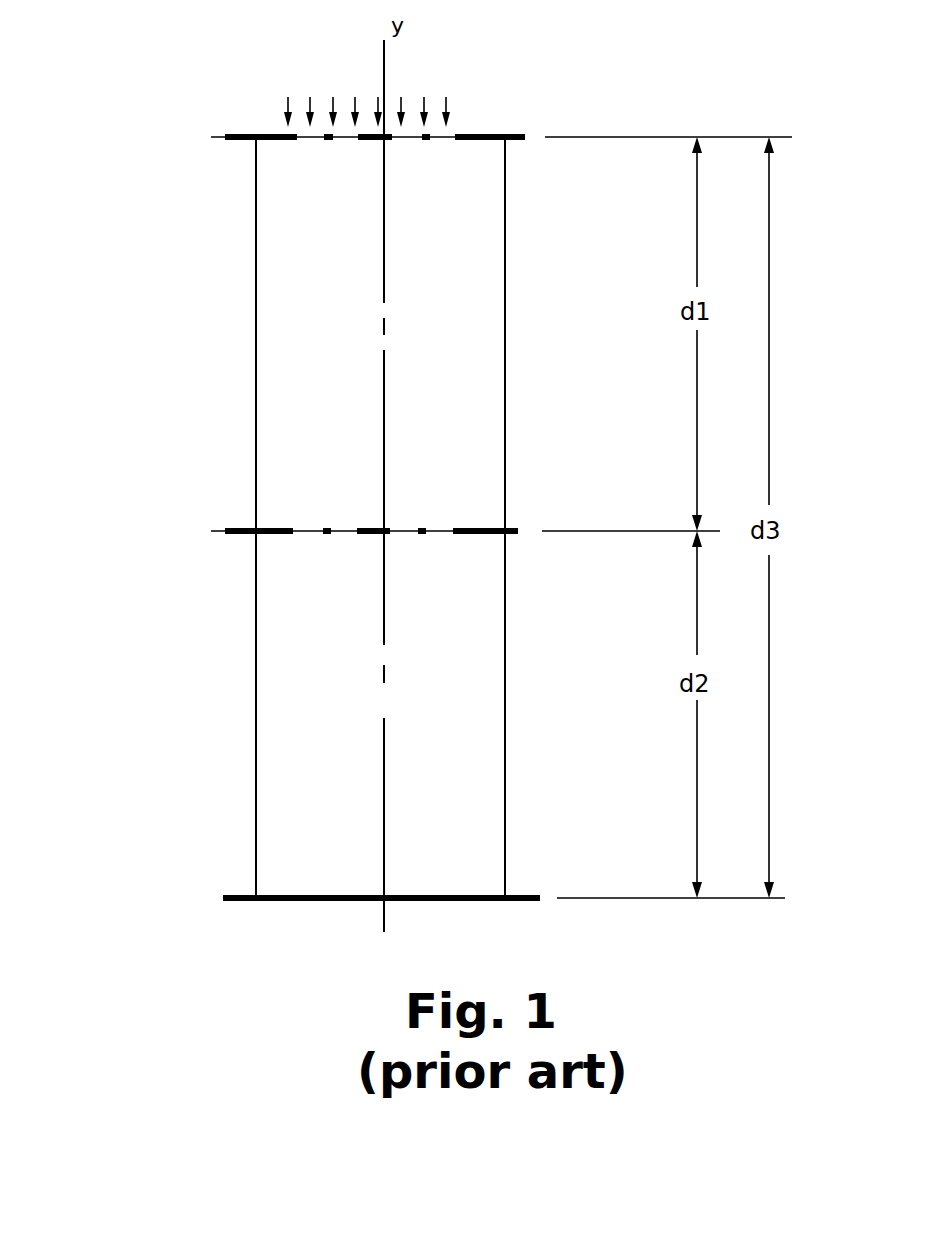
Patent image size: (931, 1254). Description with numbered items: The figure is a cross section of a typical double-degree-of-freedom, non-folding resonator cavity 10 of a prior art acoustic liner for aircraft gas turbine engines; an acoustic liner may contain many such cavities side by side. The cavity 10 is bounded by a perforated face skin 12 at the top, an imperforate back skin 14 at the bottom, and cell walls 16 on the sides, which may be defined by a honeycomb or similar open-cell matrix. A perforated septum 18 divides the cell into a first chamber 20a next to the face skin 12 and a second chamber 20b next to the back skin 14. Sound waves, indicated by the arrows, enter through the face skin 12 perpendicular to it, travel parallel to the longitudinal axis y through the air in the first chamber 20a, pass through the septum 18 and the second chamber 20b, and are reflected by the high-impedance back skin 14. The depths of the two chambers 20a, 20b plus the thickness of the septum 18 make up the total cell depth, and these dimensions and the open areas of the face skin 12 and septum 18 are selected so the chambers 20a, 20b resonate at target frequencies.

The resonator cavity 10 is at (226, 79).
The perforated face skin 12 is at (472, 135).
The imperforate back skin 14 is at (480, 902).
The cell walls 16 is at (256, 306).
The perforated septum 18 is at (518, 531).
The first chamber 20a is at (293, 250).
The second chamber 20b is at (287, 720).